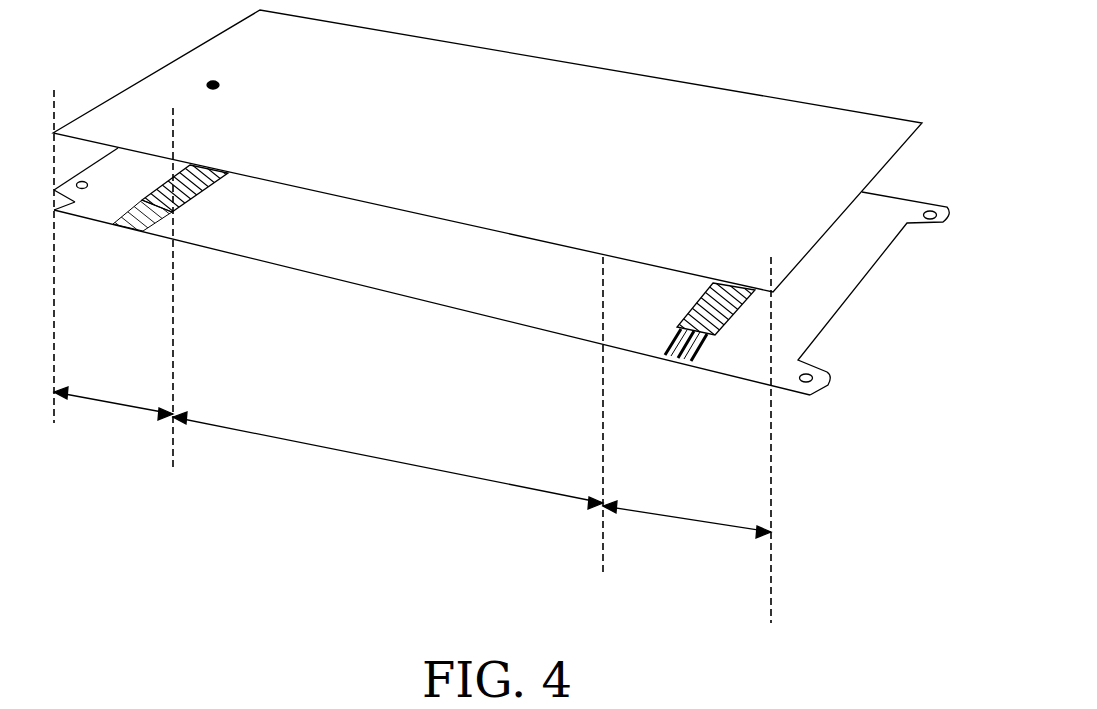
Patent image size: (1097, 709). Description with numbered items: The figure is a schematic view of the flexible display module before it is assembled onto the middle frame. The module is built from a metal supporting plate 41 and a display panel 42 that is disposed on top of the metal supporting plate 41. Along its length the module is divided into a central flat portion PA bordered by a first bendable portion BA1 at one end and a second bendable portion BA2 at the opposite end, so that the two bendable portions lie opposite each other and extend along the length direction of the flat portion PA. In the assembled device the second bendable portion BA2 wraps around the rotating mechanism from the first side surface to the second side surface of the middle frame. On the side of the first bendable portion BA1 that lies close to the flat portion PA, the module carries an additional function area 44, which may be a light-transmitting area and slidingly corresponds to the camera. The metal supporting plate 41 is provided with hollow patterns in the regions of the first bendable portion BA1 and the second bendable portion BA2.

The metal supporting plate 41 is at (250, 235).
The display panel 42 is at (412, 65).
The additional function area 44 is at (213, 82).
The first bendable portion BA1 is at (113, 280).
The flat portion PA is at (388, 461).
The second bendable portion BA2 is at (687, 440).